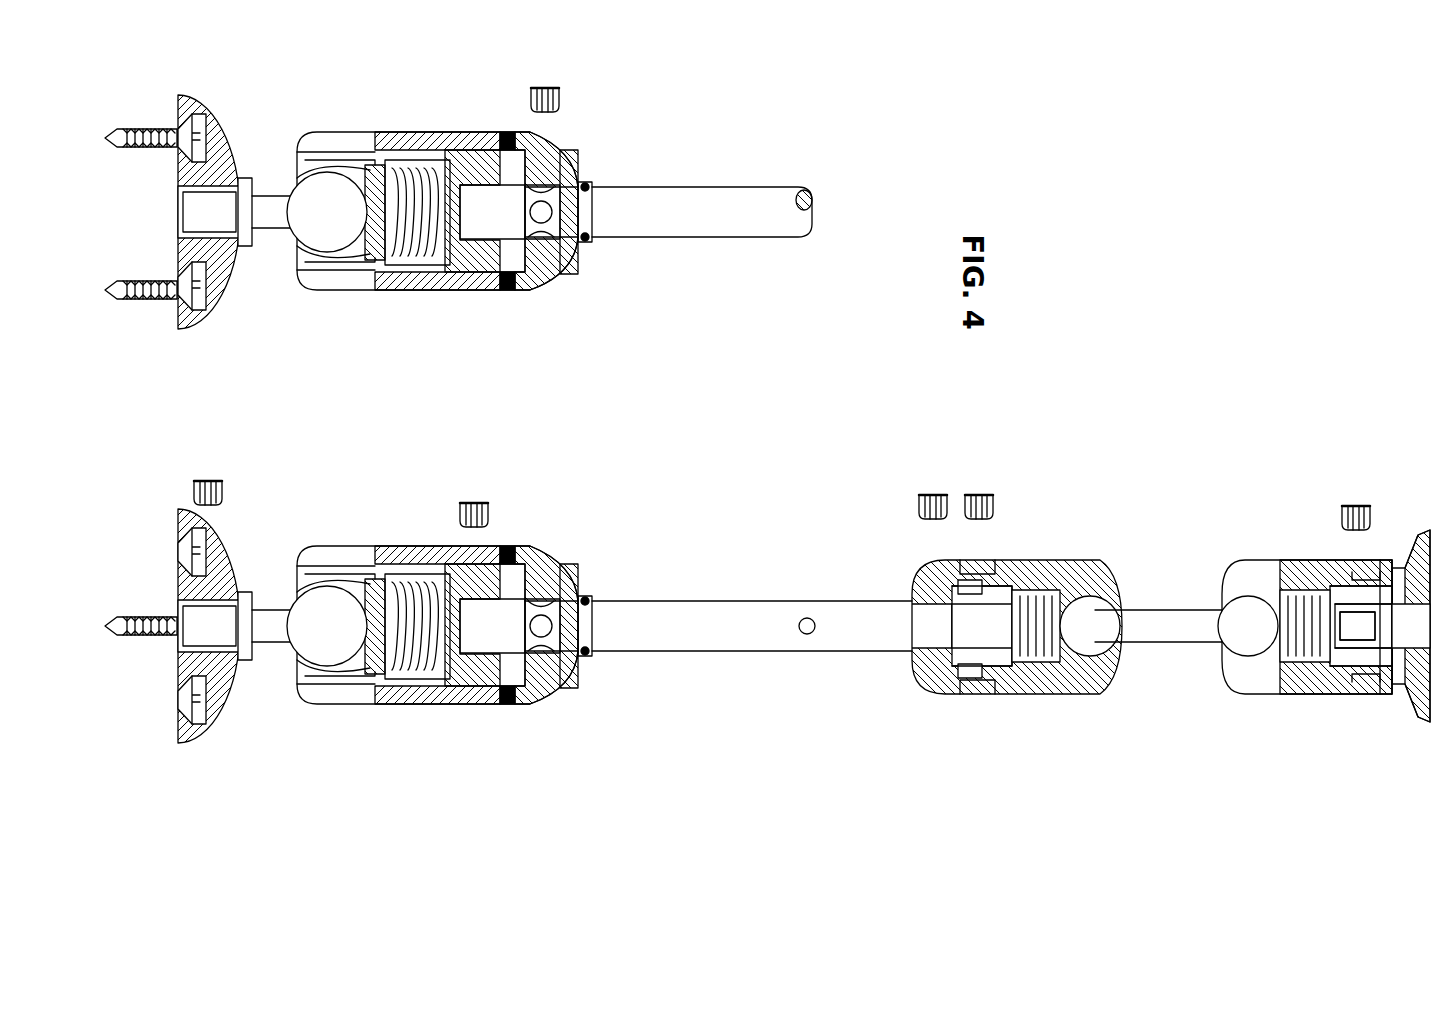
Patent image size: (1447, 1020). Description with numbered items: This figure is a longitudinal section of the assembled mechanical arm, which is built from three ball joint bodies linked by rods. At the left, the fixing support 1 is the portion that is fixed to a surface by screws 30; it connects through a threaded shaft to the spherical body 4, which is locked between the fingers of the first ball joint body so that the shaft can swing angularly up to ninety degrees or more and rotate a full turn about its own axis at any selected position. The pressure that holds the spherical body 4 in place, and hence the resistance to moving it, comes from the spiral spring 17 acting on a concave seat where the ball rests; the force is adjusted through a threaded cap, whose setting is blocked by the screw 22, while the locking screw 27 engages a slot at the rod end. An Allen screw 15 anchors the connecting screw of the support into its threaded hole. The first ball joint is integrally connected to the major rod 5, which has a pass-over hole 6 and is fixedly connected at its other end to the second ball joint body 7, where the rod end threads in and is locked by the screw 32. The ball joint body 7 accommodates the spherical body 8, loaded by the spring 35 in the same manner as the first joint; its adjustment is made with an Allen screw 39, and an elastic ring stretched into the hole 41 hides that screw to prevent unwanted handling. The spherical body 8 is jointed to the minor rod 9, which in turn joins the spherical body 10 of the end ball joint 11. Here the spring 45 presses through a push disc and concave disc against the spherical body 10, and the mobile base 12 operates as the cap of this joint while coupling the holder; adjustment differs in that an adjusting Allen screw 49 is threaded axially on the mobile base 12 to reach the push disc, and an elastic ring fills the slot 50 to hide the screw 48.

The fixing support 1 is at (206, 285).
The screws 30 is at (142, 610).
The spherical body 4 is at (330, 612).
The spiral spring 17 is at (416, 578).
The major rod 5 is at (684, 615).
The pass-over hole 6 is at (805, 618).
The locking screw 27 is at (553, 88).
The Allen screw 15 is at (210, 480).
The screw 22 is at (480, 503).
The screw 32 is at (922, 505).
The Allen screw 39 is at (990, 495).
The screw 48 is at (1355, 506).
The ball joint body 7 is at (928, 682).
The hole 41 is at (978, 698).
The spring 35 is at (1018, 560).
The spherical body 8 is at (1073, 640).
The minor rod 9 is at (1200, 632).
The end ball joint 11 is at (1248, 566).
The spring 45 is at (1268, 562).
The adjusting Allen screw 49 is at (1358, 625).
The spherical body 10 is at (1260, 640).
The slot 50 is at (1356, 696).
The mobile base 12 is at (1412, 740).